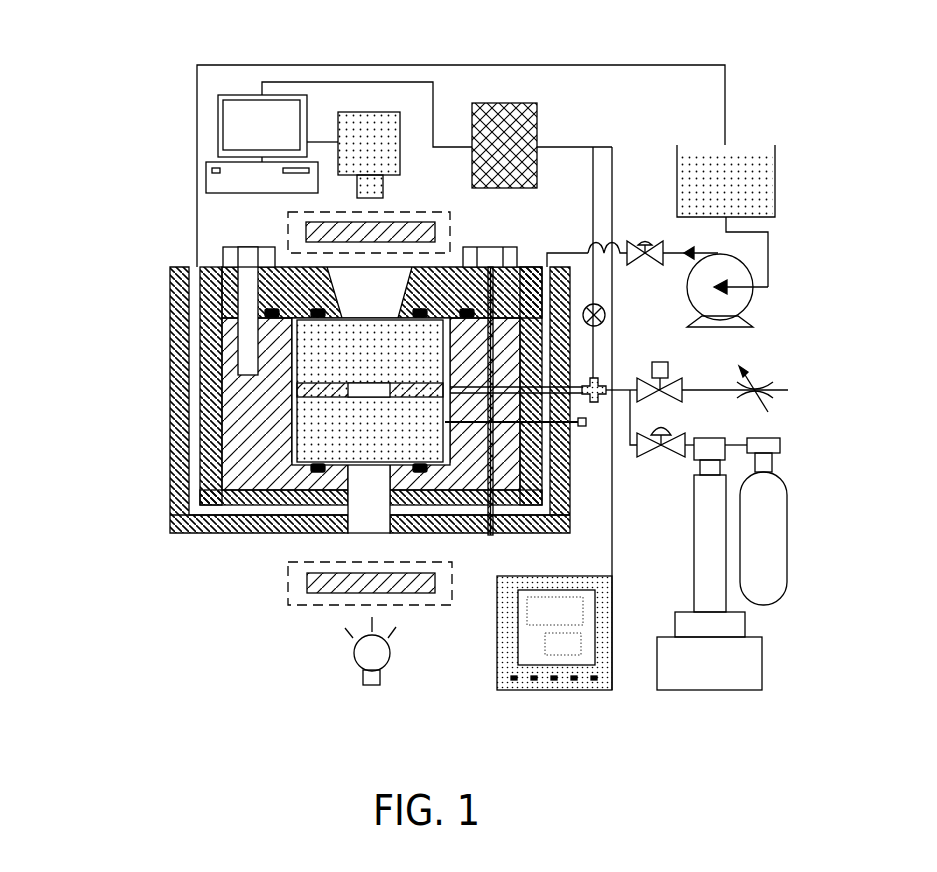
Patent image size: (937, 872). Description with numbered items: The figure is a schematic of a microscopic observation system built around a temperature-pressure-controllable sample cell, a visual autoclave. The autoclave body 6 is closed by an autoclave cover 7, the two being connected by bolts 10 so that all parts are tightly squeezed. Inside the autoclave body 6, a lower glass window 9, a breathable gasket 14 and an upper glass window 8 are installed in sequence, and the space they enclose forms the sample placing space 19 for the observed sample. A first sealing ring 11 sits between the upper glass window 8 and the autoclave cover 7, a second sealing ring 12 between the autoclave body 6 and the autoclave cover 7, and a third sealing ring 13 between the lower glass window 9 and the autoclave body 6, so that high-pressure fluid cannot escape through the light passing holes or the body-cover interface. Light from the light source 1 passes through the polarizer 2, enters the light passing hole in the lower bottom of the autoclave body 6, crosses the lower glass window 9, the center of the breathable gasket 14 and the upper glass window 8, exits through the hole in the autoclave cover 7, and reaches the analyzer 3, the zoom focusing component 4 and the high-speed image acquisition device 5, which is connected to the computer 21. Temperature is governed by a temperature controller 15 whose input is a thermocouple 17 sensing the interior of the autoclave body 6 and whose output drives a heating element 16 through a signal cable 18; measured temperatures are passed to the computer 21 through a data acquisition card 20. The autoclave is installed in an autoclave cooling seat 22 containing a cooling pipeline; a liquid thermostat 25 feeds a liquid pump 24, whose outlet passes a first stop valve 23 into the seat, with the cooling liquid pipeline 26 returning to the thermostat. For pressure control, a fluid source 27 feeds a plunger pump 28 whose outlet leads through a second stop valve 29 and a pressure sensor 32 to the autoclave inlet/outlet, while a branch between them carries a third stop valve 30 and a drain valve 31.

The light source 1 is at (350, 655).
The polarizer 2 is at (307, 597).
The analyzer 3 is at (300, 232).
The zoom focusing component 4 is at (365, 176).
The high-speed image acquisition device 5 is at (370, 147).
The autoclave body 6 is at (210, 462).
The autoclave cover 7 is at (258, 295).
The upper glass window 8 is at (288, 343).
The lower glass window 9 is at (230, 494).
The bolt 10 is at (247, 253).
The first sealing ring 11 is at (268, 323).
The second sealing ring 12 is at (258, 316).
The third sealing ring 13 is at (258, 507).
The breathable gasket 14 is at (340, 437).
The temperature controller 15 is at (538, 648).
The heating element 16 is at (467, 534).
The thermocouple 17 is at (492, 535).
The signal cable 18 is at (588, 426).
The sample placing space 19 is at (300, 415).
The data acquisition card 20 is at (498, 103).
The computer 21 is at (217, 160).
The autoclave cooling seat 22 is at (272, 497).
The first stop valve 23 is at (648, 238).
The liquid pump 24 is at (737, 303).
The liquid thermostat 25 is at (727, 187).
The cooling liquid pipeline 26 is at (722, 102).
The fluid source 27 is at (763, 525).
The plunger pump 28 is at (725, 673).
The second stop valve 29 is at (688, 437).
The third stop valve 30 is at (668, 362).
The drain valve 31 is at (774, 387).
The pressure sensor 32 is at (596, 304).